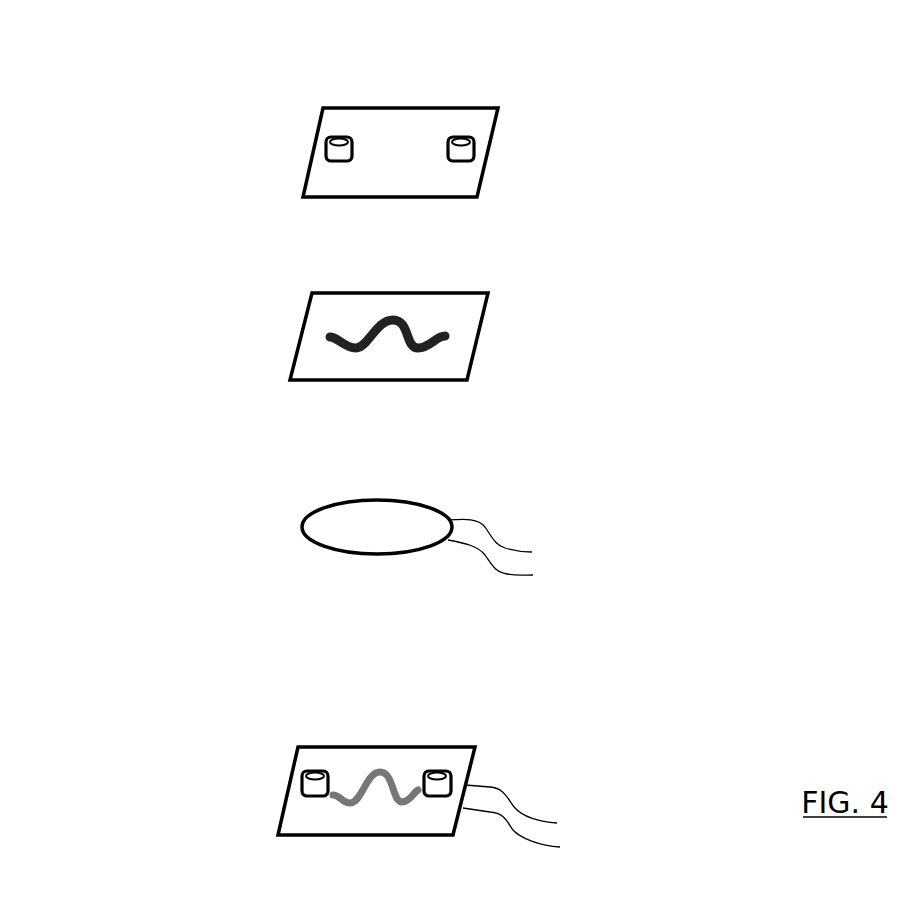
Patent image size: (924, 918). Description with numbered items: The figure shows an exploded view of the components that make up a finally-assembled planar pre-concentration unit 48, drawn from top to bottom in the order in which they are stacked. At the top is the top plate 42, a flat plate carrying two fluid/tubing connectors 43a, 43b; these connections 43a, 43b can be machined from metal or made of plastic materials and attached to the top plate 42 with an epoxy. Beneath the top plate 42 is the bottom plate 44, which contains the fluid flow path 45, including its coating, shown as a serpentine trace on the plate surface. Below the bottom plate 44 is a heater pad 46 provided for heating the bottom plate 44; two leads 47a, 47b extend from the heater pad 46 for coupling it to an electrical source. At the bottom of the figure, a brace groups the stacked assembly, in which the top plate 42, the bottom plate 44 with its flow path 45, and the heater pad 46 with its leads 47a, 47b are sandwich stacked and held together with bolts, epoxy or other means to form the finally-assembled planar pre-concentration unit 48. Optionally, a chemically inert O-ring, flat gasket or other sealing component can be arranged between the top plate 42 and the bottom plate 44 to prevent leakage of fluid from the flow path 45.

The top plate 42 is at (400, 108).
The fluid/tubing connector 43a is at (326, 144).
The fluid/tubing connector 43b is at (474, 145).
The bottom plate 44 is at (488, 295).
The fluid flow path 45 is at (442, 332).
The heater pad 46 is at (322, 512).
The lead 47a is at (475, 518).
The lead 47b is at (510, 577).
The planar pre-concentration unit 48 is at (230, 698).